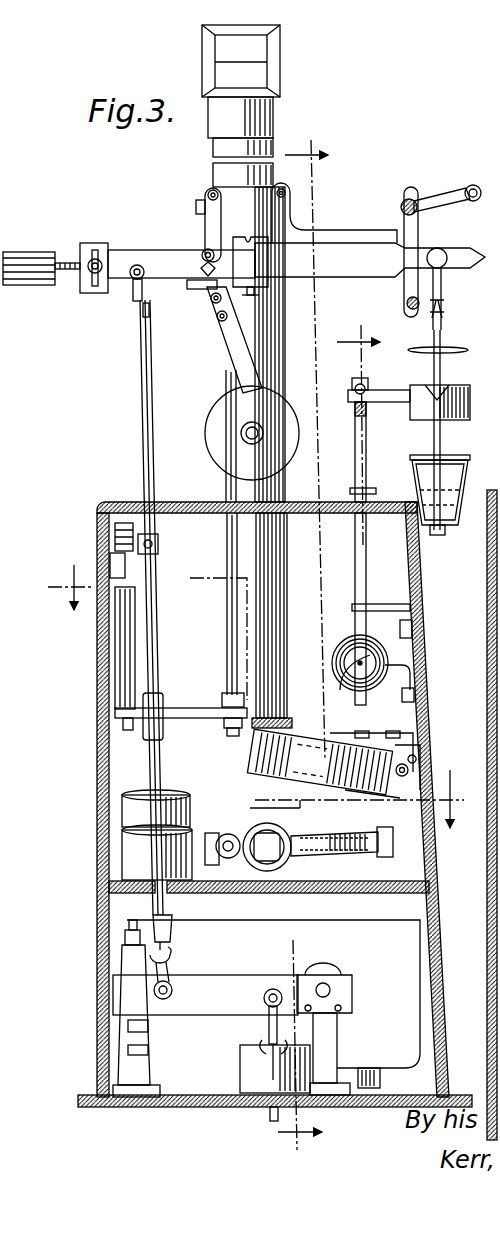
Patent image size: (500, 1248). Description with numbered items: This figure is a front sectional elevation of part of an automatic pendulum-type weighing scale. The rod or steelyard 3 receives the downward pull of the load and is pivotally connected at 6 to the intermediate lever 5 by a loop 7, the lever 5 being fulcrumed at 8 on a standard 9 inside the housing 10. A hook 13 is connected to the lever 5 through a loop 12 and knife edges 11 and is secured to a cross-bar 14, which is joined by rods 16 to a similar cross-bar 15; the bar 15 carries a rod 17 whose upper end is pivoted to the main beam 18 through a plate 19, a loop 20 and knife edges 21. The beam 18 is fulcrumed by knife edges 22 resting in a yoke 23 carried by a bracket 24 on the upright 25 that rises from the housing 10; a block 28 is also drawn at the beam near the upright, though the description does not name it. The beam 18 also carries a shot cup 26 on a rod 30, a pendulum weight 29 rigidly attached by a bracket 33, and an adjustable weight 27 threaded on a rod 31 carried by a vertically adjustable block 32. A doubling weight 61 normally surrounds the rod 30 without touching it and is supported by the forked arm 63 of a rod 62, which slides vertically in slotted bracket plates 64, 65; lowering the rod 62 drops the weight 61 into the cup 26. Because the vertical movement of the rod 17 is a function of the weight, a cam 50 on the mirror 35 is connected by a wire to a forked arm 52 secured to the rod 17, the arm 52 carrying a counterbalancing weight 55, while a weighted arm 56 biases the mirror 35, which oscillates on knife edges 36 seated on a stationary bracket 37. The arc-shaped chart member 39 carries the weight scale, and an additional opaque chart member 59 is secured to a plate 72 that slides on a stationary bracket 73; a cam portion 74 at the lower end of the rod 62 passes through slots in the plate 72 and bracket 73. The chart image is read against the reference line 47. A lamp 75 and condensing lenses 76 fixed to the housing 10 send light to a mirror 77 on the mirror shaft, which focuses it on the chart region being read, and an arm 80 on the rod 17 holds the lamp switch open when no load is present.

The rod or steelyard 3 is at (270, 1116).
The intermediate lever 5 is at (252, 981).
The pivotal connection 6 is at (328, 649).
The loop 7 is at (268, 1030).
The fulcrum 8 is at (353, 990).
The standard 9 is at (337, 1035).
The housing 10 is at (430, 774).
The knife edges 11 is at (173, 988).
The loop 12 is at (172, 970).
The hook 13 is at (170, 955).
The cross-bar 14 is at (172, 920).
The cross-bar 15 is at (165, 722).
The rods 16 is at (163, 770).
The rod 17 is at (140, 410).
The main beam 18 is at (300, 253).
The plate 19 is at (143, 316).
The loop 20 is at (133, 295).
The knife edges 21 is at (138, 264).
The knife edges 22 is at (200, 260).
The yoke or loop 23 is at (205, 230).
The bracket 24 is at (292, 232).
The upright 25 is at (275, 300).
The shot cup 26 is at (465, 472).
The adjustable weight 27 is at (33, 252).
The block 28 is at (250, 266).
The pendulum or weight 29 is at (213, 436).
The rod 30 is at (442, 435).
The rod 31 is at (62, 263).
The vertically adjustable block 32 is at (102, 243).
The bracket 33 is at (230, 362).
The mirror 35 is at (305, 808).
The knife edges 36 is at (220, 835).
The stationary bracket 37 is at (393, 856).
The chart member 39 is at (270, 718).
The reference line 47 is at (241, 106).
The cam 50 is at (257, 835).
The forked bracket or arm 52 is at (222, 700).
The counterbalancing weight 55 is at (120, 645).
The weighted arm 56 is at (490, 864).
The chart member 59 is at (270, 758).
The doubling weight 61 is at (471, 402).
The rod 62 is at (356, 562).
The forked arm 63 is at (387, 398).
The bracket plate 64 is at (376, 488).
The bracket plate 65 is at (395, 608).
The plate 72 is at (350, 680).
The stationary bracket 73 is at (418, 745).
The cam portion 74 is at (380, 740).
The light 75 is at (333, 655).
The condensing lenses 76 is at (345, 745).
The mirror or reflector 77 is at (340, 836).
The arm 80 is at (158, 546).